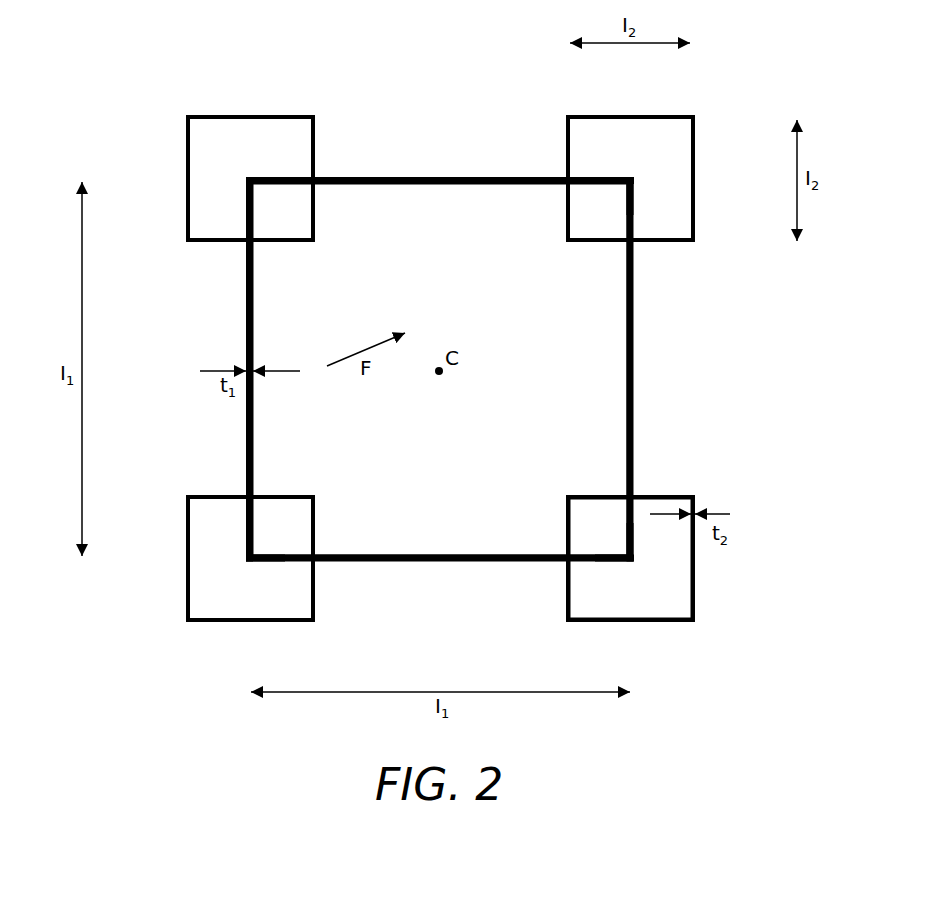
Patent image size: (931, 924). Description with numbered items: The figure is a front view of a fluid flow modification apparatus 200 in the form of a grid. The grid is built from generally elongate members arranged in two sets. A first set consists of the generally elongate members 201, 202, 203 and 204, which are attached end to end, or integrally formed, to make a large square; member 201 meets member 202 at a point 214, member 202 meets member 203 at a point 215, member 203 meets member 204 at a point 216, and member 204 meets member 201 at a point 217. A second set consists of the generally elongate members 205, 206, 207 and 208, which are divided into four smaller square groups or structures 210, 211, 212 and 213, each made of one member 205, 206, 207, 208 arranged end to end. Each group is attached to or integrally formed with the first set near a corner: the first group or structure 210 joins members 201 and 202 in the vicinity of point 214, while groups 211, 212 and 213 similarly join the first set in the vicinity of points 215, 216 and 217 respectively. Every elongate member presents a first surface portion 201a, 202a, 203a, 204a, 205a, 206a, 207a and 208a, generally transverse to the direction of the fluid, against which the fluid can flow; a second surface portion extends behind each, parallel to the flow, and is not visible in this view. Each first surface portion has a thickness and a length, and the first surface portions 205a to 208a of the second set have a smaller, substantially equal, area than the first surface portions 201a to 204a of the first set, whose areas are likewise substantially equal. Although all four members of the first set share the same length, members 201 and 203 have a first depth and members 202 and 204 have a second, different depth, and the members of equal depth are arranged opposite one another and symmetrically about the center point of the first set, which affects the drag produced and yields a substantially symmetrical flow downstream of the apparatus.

The fluid flow modification apparatus 200 is at (425, 369).
The generally elongate member 201 is at (253, 326).
The first surface portion 201a is at (253, 408).
The generally elongate member 202 is at (405, 178).
The first surface portion 202a is at (405, 184).
The generally elongate member 203 is at (634, 330).
The first surface portion 203a is at (634, 408).
The generally elongate member 204 is at (405, 562).
The first surface portion 204a is at (405, 556).
The generally elongate member 205 is at (186, 178).
The first surface portion 205a is at (566, 583).
The generally elongate member 206 is at (252, 115).
The first surface portion 206a is at (590, 495).
The generally elongate member 207 is at (315, 150).
The first surface portion 207a is at (695, 605).
The generally elongate member 208 is at (285, 242).
The first surface portion 208a is at (590, 622).
The first group or structure 210 is at (175, 103).
The group or structure 211 is at (705, 100).
The group or structure 212 is at (708, 638).
The group or structure 213 is at (175, 635).
The point 214 is at (248, 178).
The point 215 is at (632, 180).
The point 216 is at (632, 560).
The point 217 is at (248, 560).